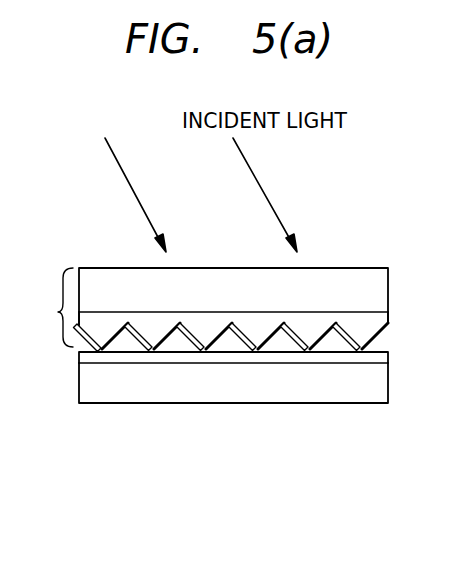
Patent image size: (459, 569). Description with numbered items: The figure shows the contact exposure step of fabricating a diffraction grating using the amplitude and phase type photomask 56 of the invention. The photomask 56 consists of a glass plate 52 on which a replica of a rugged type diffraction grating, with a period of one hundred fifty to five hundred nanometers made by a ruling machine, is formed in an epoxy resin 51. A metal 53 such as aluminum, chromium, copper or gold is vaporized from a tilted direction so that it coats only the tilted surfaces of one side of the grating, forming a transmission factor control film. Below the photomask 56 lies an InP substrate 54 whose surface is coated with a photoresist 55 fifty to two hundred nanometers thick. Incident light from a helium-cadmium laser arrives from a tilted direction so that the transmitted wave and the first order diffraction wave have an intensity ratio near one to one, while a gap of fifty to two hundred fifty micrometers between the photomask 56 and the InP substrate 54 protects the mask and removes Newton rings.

The epoxy resin 51 is at (372, 318).
The glass plate 52 is at (387, 287).
The metal 53 is at (137, 341).
The InP substrate 54 is at (387, 395).
The photoresist 55 is at (387, 352).
The photomask 56 is at (52, 307).